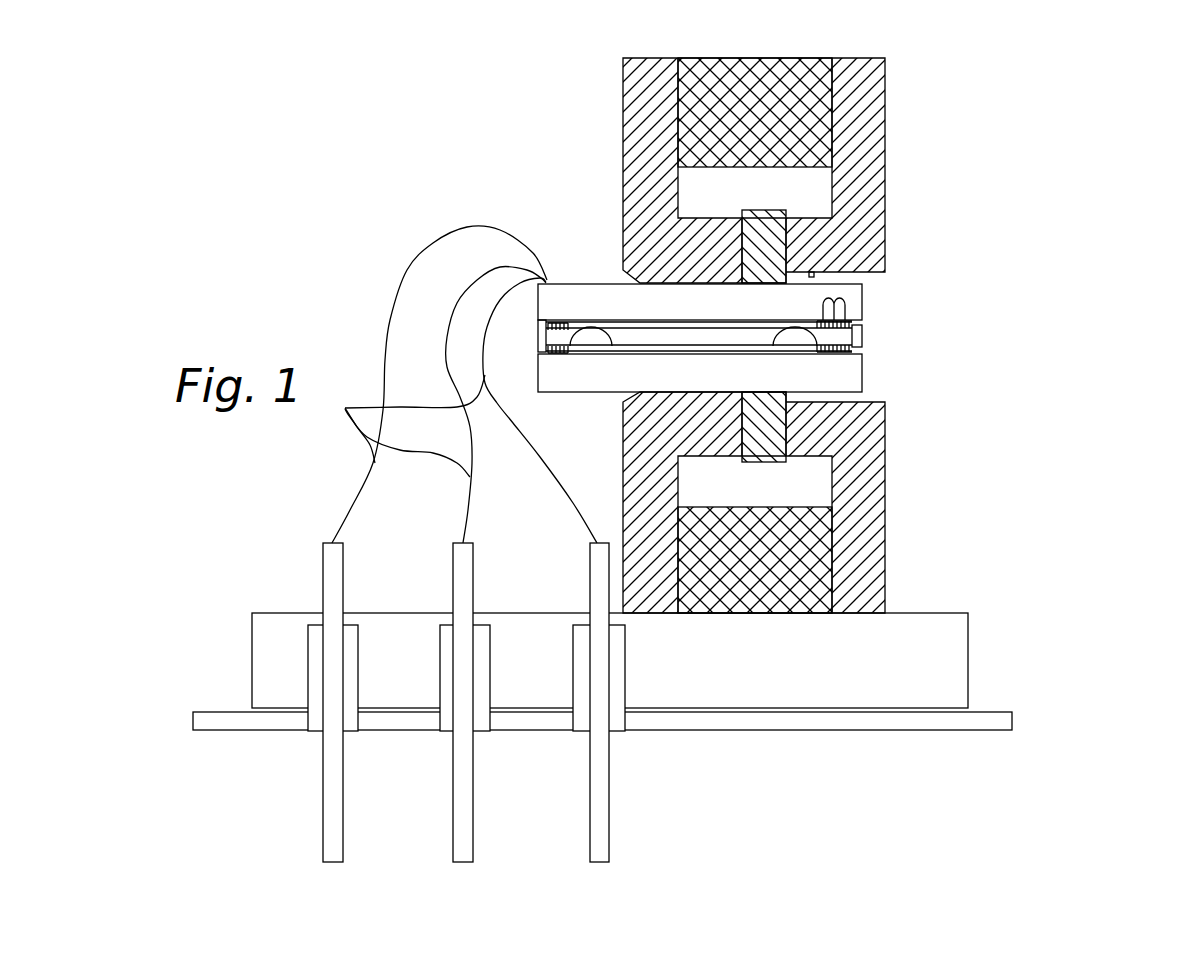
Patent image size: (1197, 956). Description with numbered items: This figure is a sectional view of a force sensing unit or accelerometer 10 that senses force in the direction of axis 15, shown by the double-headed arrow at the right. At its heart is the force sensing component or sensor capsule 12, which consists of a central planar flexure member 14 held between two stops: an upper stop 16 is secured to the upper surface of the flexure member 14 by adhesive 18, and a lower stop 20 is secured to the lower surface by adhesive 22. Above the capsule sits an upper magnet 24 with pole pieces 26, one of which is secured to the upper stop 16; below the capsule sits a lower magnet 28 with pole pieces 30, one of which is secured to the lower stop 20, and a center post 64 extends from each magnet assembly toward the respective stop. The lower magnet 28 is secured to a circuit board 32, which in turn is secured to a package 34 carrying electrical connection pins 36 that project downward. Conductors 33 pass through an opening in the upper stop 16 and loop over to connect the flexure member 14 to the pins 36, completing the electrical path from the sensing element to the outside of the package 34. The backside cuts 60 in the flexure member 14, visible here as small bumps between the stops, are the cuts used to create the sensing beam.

The force sensing unit 10 is at (993, 110).
The sensor capsule 12 is at (992, 311).
The flexure member 14 is at (862, 342).
The axis 15 is at (1117, 555).
The upper stop 16 is at (862, 300).
The adhesive 18 is at (538, 325).
The lower stop 20 is at (863, 373).
The adhesive 22 is at (538, 353).
The upper magnet 24 is at (793, 58).
The pole pieces 26 is at (623, 158).
The lower magnet 28 is at (747, 614).
The pole pieces 30 is at (623, 492).
The circuit board 32 is at (886, 686).
The conductors 33 is at (455, 384).
The package 34 is at (913, 731).
The electrical connection pins 36 is at (343, 817).
The backside cuts 60 is at (585, 350).
The center post 64 is at (763, 211).